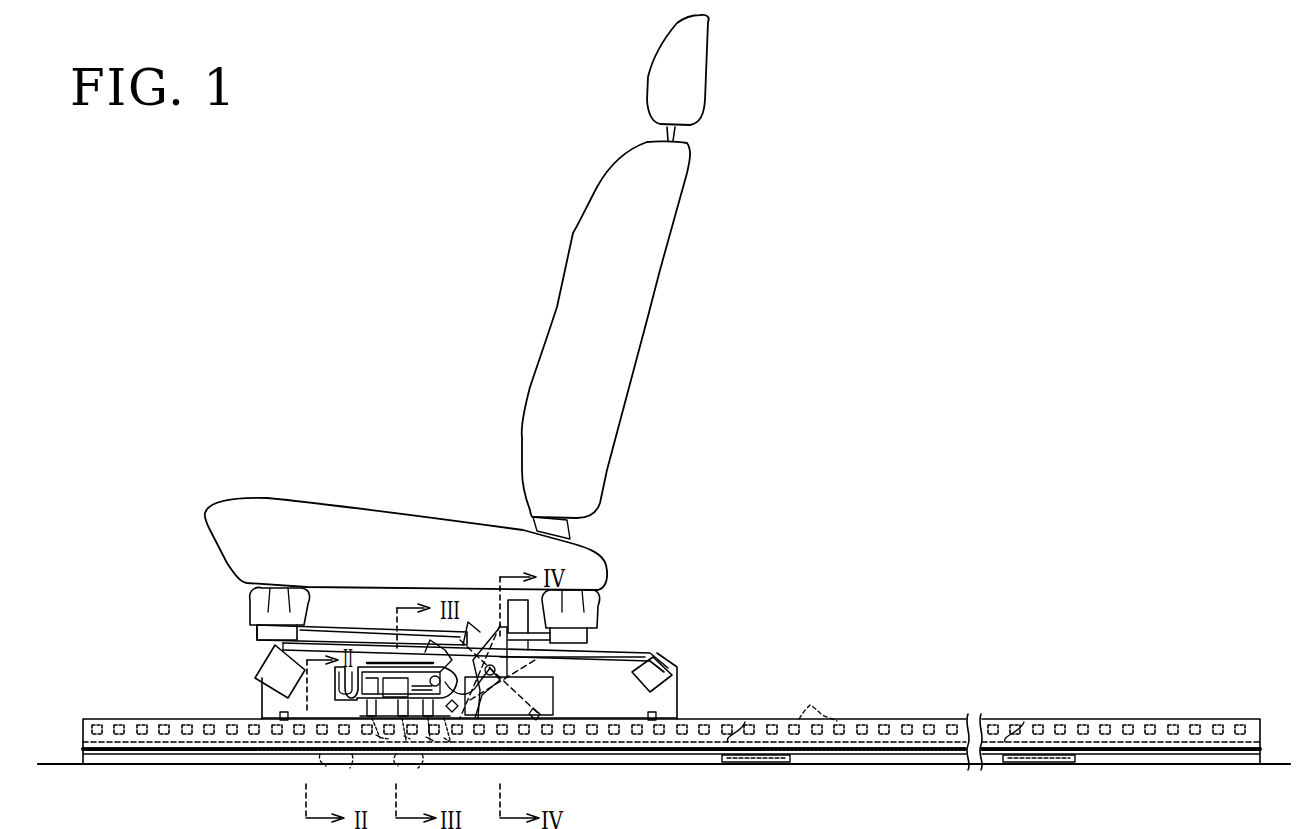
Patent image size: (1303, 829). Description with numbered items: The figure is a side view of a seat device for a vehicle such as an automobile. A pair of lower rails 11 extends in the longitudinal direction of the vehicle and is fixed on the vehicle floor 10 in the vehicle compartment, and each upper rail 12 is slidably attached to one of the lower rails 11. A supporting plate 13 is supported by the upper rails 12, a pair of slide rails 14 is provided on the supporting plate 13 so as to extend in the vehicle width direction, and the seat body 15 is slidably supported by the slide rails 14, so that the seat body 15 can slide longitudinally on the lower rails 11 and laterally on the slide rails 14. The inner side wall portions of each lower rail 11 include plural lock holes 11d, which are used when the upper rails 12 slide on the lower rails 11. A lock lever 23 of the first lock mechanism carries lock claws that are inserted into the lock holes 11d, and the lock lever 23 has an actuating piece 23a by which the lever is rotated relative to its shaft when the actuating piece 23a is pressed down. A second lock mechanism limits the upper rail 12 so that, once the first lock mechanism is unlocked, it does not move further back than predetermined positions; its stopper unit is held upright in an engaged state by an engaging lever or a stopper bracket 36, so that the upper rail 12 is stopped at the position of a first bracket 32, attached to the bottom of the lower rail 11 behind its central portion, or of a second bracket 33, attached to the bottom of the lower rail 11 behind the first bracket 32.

The vehicle floor 10 is at (62, 764).
The lower rail 11 is at (1232, 719).
The lock holes 11d is at (350, 770).
The upper rail 12 is at (677, 690).
The supporting plate 13 is at (648, 643).
The slide rails 14 is at (248, 610).
The seat body 15 is at (412, 514).
The lock lever 23 is at (353, 703).
The actuating piece 23a is at (408, 746).
The first bracket 32 is at (748, 720).
The second bracket 33 is at (1030, 720).
The stopper bracket 36 is at (592, 630).